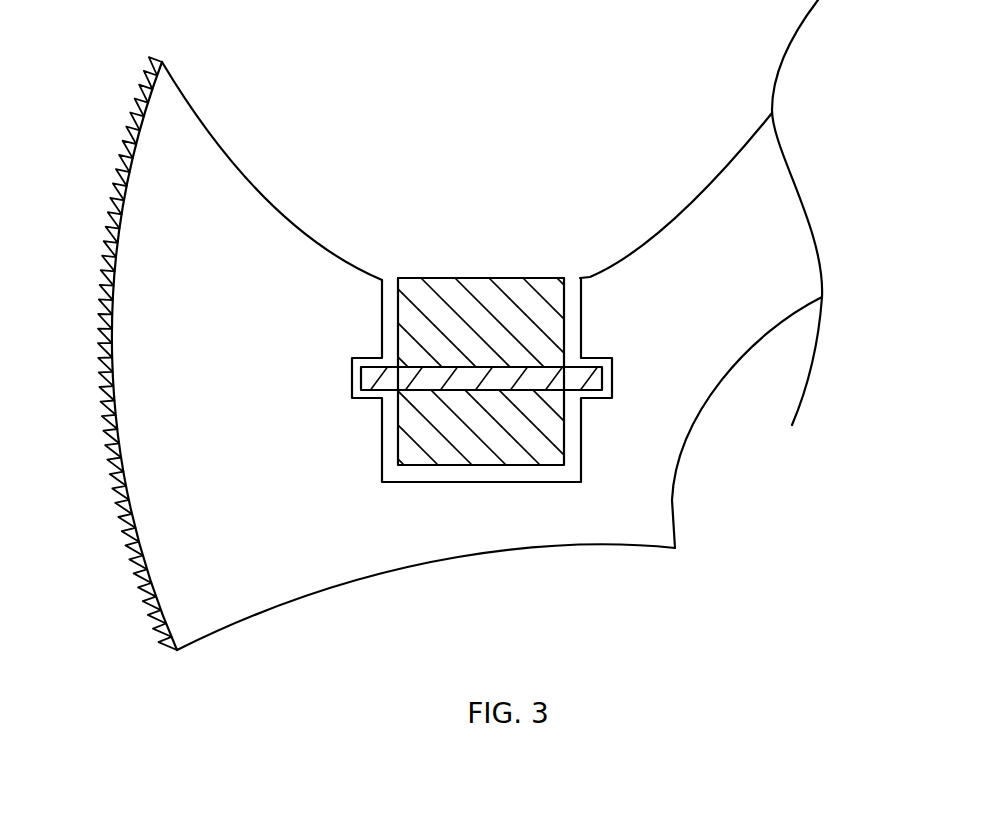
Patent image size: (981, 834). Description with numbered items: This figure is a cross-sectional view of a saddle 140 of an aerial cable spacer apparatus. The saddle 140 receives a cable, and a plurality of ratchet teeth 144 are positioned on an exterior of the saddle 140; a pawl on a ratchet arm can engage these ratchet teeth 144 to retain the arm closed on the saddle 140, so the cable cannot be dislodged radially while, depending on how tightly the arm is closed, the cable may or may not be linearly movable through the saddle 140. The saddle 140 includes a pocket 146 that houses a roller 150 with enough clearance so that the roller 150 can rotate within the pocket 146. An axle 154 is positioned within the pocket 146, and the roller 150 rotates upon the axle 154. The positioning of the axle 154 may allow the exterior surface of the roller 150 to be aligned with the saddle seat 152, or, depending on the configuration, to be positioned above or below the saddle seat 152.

The saddle 140 is at (282, 563).
The ratchet teeth 144 is at (120, 137).
The pocket 146 is at (389, 293).
The roller 150 is at (498, 300).
The saddle seat 152 is at (426, 280).
The axle 154 is at (593, 378).